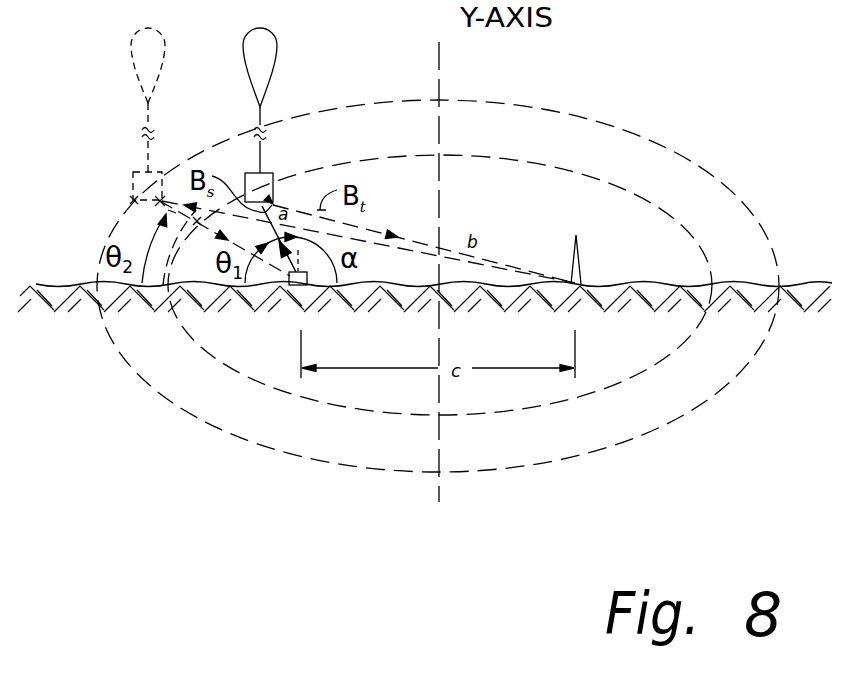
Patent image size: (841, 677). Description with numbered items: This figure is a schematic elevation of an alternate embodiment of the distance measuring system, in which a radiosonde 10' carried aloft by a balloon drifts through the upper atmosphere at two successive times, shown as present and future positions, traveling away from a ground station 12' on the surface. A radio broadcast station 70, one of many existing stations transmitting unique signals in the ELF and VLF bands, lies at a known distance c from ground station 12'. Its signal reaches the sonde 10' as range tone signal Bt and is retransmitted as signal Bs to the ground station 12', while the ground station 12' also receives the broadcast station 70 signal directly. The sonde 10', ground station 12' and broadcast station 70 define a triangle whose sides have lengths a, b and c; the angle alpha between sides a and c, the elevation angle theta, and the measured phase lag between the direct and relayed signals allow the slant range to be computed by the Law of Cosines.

The radiosonde 10' is at (190, 115).
The ground station 12' is at (271, 307).
The radio broadcast station 70 is at (580, 258).